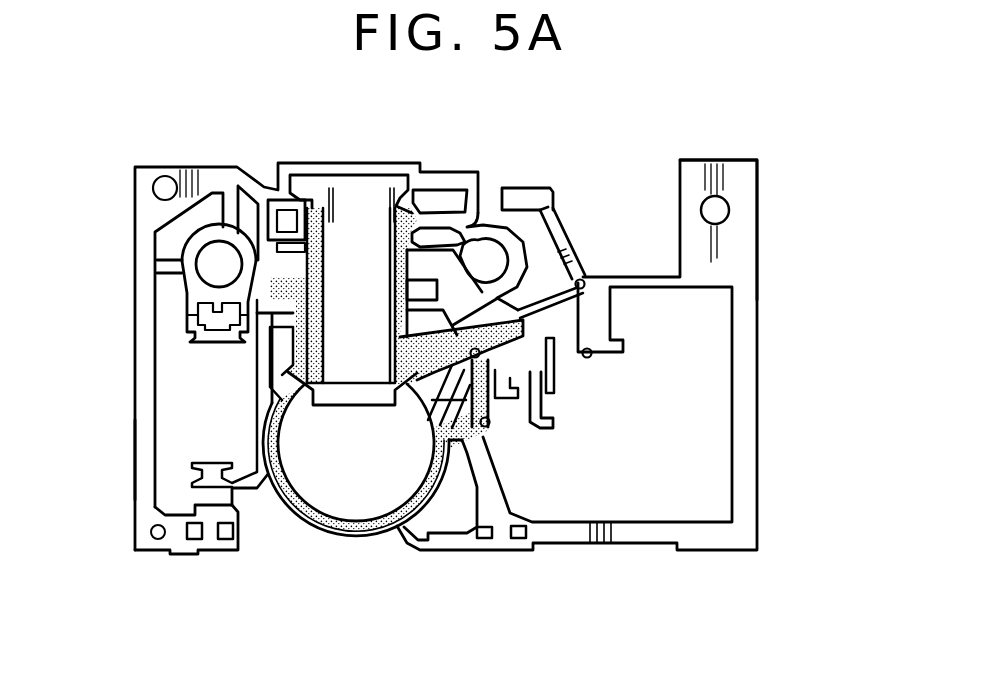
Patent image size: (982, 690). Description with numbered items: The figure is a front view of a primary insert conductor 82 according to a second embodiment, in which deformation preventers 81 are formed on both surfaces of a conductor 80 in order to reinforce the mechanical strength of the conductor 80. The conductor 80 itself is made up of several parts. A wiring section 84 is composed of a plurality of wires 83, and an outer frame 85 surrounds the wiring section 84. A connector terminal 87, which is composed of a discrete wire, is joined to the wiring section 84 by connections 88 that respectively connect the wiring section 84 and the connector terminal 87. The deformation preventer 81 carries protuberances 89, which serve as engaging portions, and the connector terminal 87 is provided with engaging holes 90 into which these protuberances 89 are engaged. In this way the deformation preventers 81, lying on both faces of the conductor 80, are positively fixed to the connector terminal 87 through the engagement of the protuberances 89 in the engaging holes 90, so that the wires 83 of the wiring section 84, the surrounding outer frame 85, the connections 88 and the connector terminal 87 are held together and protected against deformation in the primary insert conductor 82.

The conductor 80 is at (150, 389).
The deformation preventer 81 is at (348, 530).
The primary insert conductor 82 is at (606, 185).
The wire 83 is at (543, 418).
The wiring section 84 is at (560, 410).
The outer frame 85 is at (150, 455).
The connector terminal 87 is at (525, 186).
The connection 88 is at (228, 205).
The protuberance 89 is at (481, 354).
The engaging hole 90 is at (584, 278).